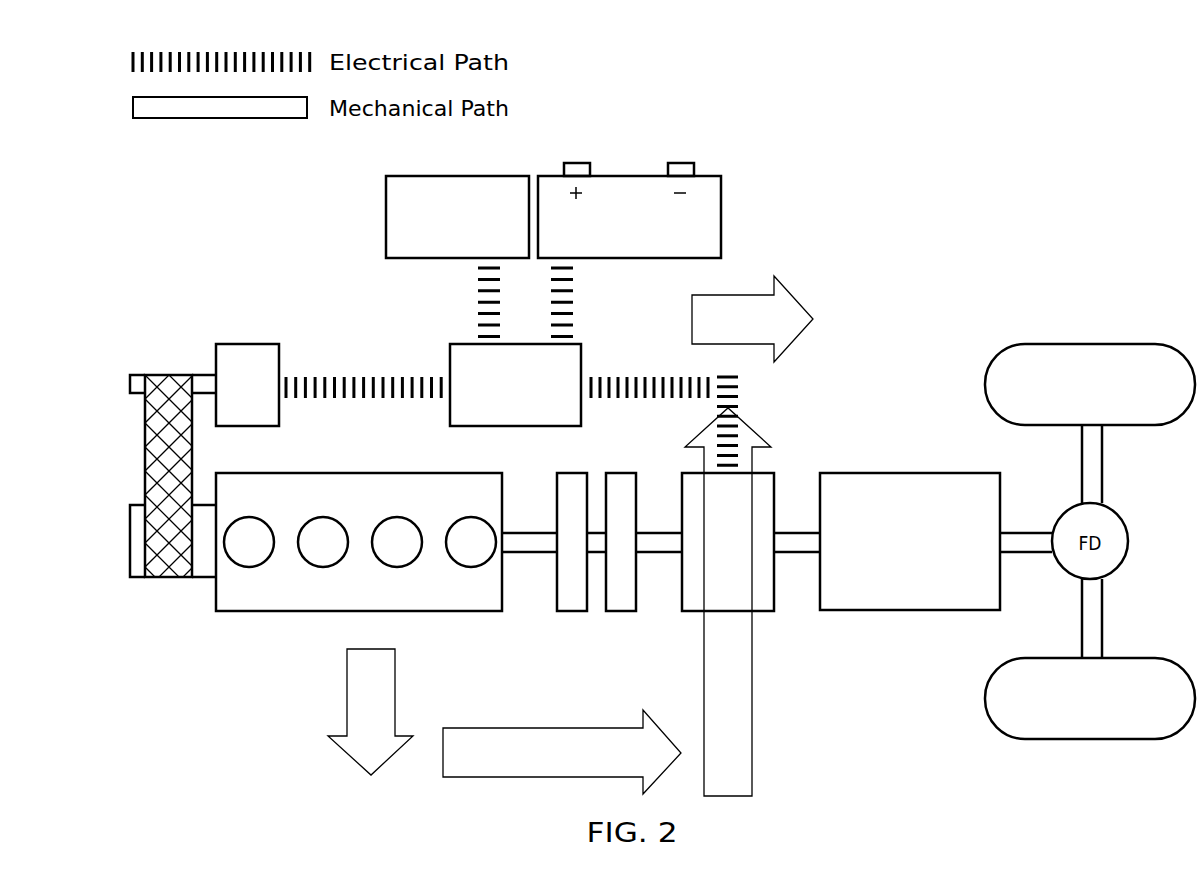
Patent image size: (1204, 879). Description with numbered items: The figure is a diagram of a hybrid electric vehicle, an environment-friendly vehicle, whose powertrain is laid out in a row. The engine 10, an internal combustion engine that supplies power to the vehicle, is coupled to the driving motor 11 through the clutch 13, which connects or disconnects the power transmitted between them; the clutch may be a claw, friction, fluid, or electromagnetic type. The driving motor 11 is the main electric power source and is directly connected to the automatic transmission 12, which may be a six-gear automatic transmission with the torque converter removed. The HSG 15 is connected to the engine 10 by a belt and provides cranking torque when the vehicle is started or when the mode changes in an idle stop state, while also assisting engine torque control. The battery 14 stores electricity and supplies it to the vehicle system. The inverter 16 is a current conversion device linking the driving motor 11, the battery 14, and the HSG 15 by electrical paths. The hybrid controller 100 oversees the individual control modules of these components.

The hybrid controller (HCU) 100 is at (386, 215).
The battery 14 is at (721, 214).
The hybrid starter/generator (HSG) 15 is at (246, 343).
The inverter 16 is at (450, 343).
The engine 10 is at (357, 472).
The clutch 13 is at (620, 472).
The driving motor 11 is at (774, 611).
The automatic transmission 12 is at (908, 472).